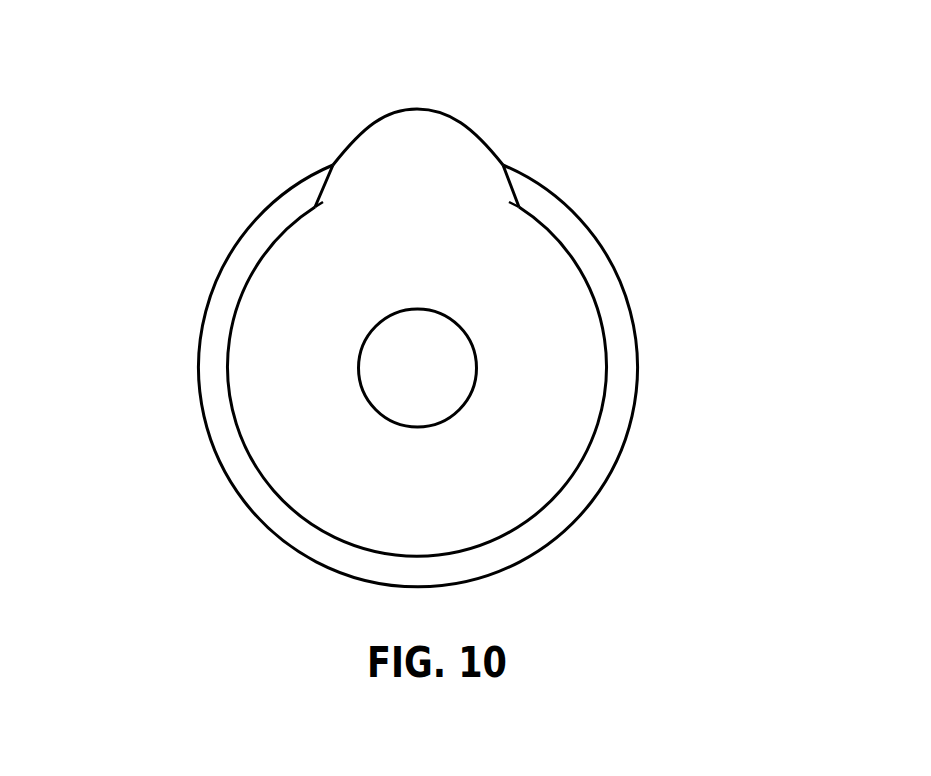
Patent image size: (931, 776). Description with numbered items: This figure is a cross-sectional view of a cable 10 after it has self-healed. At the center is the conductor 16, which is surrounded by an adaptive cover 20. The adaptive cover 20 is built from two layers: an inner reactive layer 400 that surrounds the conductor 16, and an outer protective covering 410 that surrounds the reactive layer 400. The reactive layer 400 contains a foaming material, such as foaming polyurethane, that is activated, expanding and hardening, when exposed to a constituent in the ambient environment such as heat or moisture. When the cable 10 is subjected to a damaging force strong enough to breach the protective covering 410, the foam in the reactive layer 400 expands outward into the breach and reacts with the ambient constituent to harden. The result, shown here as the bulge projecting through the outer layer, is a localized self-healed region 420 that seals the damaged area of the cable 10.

The cable 10 is at (170, 150).
The conductor 16 is at (447, 380).
The adaptive cover 20 is at (782, 123).
The reactive layer 400 is at (547, 339).
The protective covering 410 is at (547, 215).
The localized self-healed region 420 is at (430, 125).